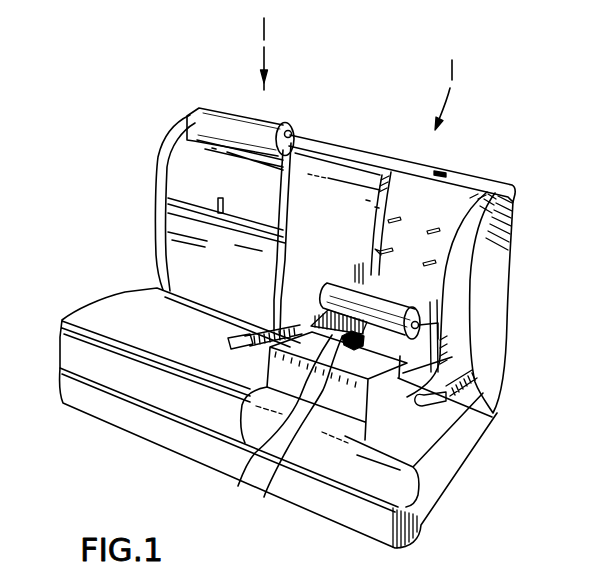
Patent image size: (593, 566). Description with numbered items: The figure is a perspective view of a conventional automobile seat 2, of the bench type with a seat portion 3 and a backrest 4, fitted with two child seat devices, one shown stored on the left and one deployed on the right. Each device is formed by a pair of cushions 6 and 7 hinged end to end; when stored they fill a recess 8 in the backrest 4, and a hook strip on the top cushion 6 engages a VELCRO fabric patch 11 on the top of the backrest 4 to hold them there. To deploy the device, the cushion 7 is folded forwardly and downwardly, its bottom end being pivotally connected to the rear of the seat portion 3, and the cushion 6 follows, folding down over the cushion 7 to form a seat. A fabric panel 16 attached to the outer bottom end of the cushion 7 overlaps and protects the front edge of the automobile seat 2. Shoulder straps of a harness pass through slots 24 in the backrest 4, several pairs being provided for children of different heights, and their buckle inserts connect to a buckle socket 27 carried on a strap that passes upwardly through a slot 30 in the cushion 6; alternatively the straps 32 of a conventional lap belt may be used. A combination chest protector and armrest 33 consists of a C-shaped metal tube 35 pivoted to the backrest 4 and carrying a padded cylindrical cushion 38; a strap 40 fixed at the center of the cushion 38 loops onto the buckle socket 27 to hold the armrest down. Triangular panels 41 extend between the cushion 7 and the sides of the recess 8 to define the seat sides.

The automobile seat 2 is at (66, 318).
The seat portion 3 is at (130, 384).
The backrest 4 is at (490, 353).
The cushion 6 is at (182, 160).
The cushion 7 is at (175, 252).
The recess 8 is at (378, 184).
The VELCRO fabric patch 11 is at (440, 172).
The fabric panel 16 is at (328, 458).
The slots 24 is at (400, 218).
The buckle socket 27 is at (247, 437).
The slot 30 is at (236, 181).
The straps of a lap belt 32 is at (228, 342).
The combination chest protector and armrest 33 is at (228, 108).
The C-shaped metal tube 35 is at (440, 335).
The cylindrical cushion 38 is at (291, 133).
The strap 40 is at (437, 334).
The triangular panels 41 is at (303, 328).